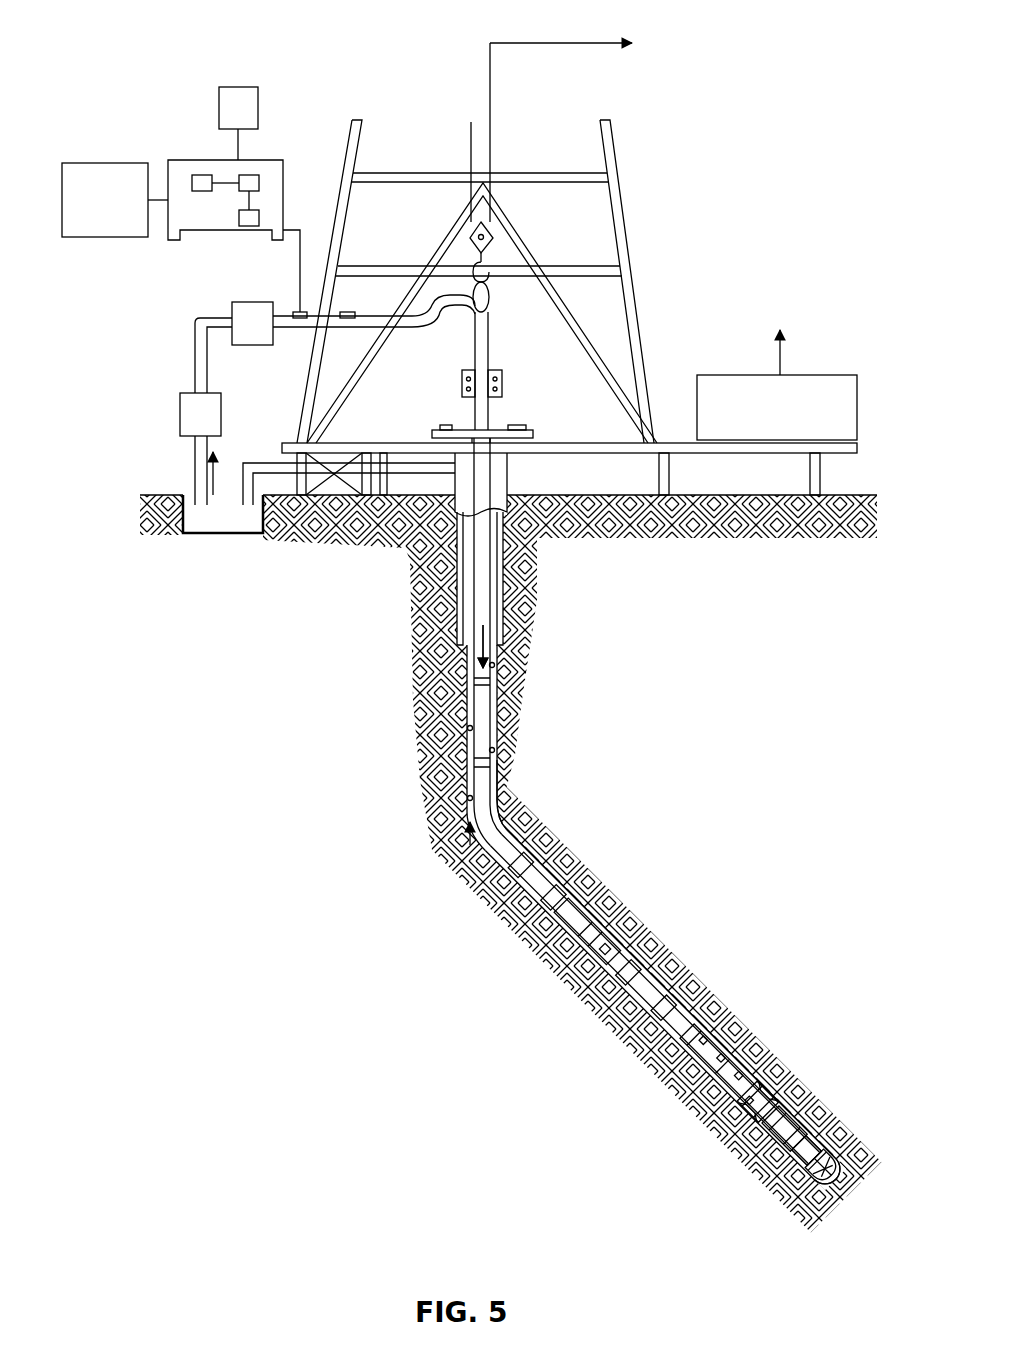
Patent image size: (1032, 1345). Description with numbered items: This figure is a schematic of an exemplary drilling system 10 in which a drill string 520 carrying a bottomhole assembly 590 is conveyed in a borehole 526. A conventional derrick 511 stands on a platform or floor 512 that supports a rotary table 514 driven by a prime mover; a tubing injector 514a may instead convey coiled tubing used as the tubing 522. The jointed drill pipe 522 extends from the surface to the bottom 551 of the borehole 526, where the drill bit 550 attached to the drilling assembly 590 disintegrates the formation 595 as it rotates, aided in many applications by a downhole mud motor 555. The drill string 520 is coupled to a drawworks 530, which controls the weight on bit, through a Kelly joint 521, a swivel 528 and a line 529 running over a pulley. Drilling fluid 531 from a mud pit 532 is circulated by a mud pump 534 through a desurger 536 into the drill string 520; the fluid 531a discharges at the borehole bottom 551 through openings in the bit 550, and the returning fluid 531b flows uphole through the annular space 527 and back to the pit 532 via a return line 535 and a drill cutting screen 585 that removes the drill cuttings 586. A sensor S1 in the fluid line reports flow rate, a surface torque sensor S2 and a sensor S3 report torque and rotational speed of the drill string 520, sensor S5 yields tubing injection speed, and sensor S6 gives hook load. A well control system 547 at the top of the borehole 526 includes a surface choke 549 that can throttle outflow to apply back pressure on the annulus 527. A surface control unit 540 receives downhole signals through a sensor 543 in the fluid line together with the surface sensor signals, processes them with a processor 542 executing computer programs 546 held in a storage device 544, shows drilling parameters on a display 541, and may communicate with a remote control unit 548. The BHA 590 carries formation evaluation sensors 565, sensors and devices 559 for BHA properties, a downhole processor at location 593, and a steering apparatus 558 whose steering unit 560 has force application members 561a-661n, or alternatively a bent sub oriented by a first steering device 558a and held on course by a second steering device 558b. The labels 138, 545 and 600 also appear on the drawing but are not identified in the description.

The drilling system 10 is at (193, 28).
The fluid conduit 138 is at (302, 327).
The derrick 511 is at (633, 283).
The platform or floor 512 is at (688, 443).
The rotary table 514 is at (510, 438).
The tubing injector 514a is at (503, 385).
The drill string 520 is at (492, 740).
The Kelly joint 521 is at (490, 360).
The drill pipe 522 is at (470, 740).
The borehole 526 is at (500, 822).
The annular space 527 is at (525, 860).
The swivel 528 is at (473, 307).
The line 529 is at (491, 118).
The drawworks 530 is at (805, 375).
The drilling fluid 531 is at (193, 505).
The drilling fluid 531a is at (492, 665).
The returning drilling fluid 531b is at (472, 848).
The mud pit 532 is at (210, 532).
The mud pump 534 is at (180, 412).
The return line 535 is at (407, 475).
The desurger 536 is at (232, 312).
The surface control unit 540 is at (212, 160).
The display/monitor 541 is at (238, 87).
The processor 542 is at (200, 175).
The sensor 543 is at (300, 312).
The storage device 544 is at (248, 160).
The sensor 545 is at (513, 432).
The computer programs 546 is at (249, 226).
The well control system 547 is at (443, 398).
The remote control unit 548 is at (105, 163).
The surface choke 549 is at (556, 542).
The drill bit 550 is at (832, 1148).
The borehole bottom 551 is at (807, 1210).
The downhole motor 555 is at (570, 918).
The steering apparatus 558 is at (797, 1127).
The first steering device 558a is at (775, 1103).
The second steering device 558b is at (747, 1172).
The sensors and devices 559 is at (763, 1197).
The steering unit 560 is at (750, 1132).
The force application members 561a-661n is at (833, 1040).
The formation evaluation sensors 565 is at (640, 1068).
The drill cutting screen 585 is at (340, 436).
The drill cuttings 586 is at (495, 667).
The bottomhole assembly 590 is at (690, 922).
The downhole processor location 593 is at (623, 983).
The formation 595 is at (790, 982).
The BHA tool 600 is at (720, 1038).
The sensor S1 is at (347, 310).
The surface torque sensor S2 is at (517, 428).
The sensor S3 is at (445, 427).
The sensor S5 is at (490, 322).
The sensor S6 is at (493, 272).